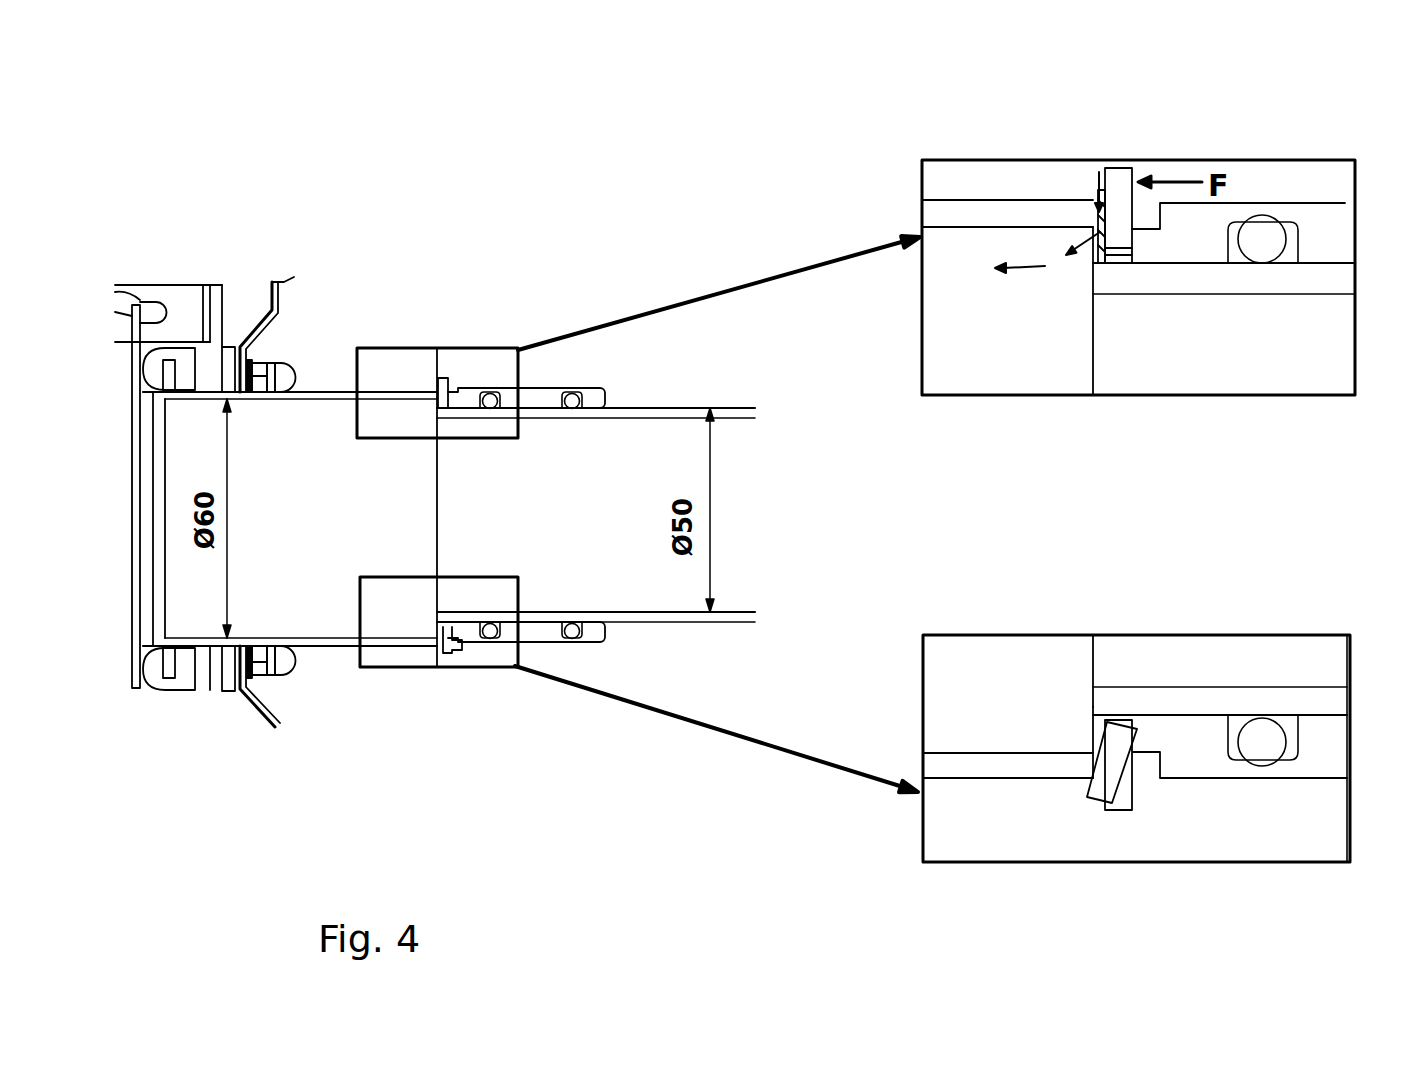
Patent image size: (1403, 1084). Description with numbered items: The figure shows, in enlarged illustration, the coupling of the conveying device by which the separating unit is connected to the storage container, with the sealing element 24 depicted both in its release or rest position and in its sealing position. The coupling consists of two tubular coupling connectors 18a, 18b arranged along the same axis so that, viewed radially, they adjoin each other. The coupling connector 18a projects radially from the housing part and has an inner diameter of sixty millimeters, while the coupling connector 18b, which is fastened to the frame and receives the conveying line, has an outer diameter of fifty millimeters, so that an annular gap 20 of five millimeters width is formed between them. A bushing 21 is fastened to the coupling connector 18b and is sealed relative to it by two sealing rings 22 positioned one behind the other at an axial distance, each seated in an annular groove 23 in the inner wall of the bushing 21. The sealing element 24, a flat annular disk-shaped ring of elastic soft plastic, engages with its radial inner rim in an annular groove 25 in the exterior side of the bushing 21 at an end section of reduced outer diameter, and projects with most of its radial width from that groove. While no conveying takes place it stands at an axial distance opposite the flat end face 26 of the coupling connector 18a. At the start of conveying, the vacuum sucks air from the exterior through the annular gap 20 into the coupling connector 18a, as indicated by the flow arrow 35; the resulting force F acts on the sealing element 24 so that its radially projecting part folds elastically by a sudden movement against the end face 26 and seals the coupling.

The coupling connector 18a is at (297, 428).
The coupling connector 18b is at (652, 408).
The annular gap 20 is at (437, 390).
The bushing 21 is at (593, 388).
The sealing ring 22 is at (572, 412).
The annular groove 23 is at (575, 393).
The sealing element 24 is at (445, 650).
The annular groove 25 is at (1118, 240).
The flat end face 26 is at (1090, 762).
The flow arrow 35 is at (1100, 222).